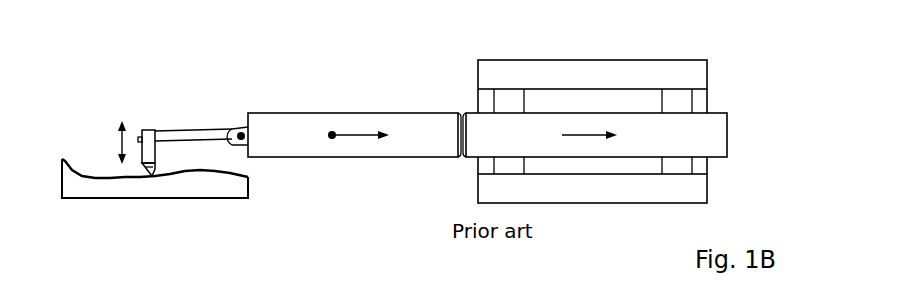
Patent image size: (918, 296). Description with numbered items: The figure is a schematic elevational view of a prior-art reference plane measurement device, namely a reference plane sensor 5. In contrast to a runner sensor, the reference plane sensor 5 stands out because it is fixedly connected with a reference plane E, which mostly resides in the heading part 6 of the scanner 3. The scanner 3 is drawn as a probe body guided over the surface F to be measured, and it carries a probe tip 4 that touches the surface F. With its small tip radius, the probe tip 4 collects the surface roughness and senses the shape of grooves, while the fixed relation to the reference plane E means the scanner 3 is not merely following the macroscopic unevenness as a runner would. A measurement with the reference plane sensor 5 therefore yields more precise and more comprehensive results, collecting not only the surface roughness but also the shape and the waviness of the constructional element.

The scanner 3 is at (170, 154).
The probe tip 4 is at (151, 172).
The reference plane sensor 5 is at (439, 50).
The heading part 6 is at (741, 121).
The reference plane E is at (565, 113).
The surface F is at (84, 172).